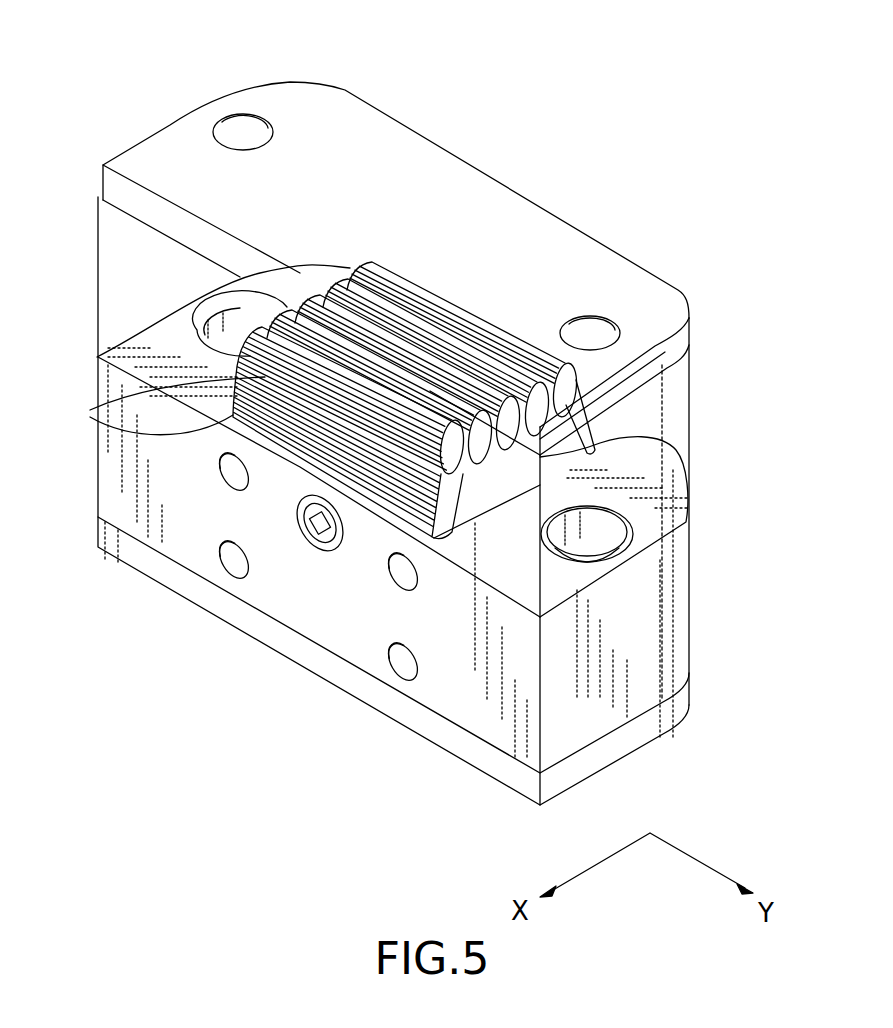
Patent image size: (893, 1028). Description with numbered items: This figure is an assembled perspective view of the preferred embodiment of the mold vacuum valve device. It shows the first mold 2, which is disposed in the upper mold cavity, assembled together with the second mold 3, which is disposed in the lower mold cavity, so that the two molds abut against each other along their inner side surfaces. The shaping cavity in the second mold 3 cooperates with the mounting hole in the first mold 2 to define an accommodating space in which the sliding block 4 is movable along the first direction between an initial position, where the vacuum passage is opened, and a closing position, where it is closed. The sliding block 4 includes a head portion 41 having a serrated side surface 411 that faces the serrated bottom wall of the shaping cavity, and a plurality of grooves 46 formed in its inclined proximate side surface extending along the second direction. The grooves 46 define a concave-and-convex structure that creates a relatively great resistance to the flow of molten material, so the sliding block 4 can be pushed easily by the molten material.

The first mold 2 is at (597, 660).
The second mold 3 is at (530, 200).
The sliding block 4 is at (372, 250).
The head portion 41 is at (495, 301).
The serrated side surface 411 is at (462, 304).
The grooves 46 is at (92, 411).